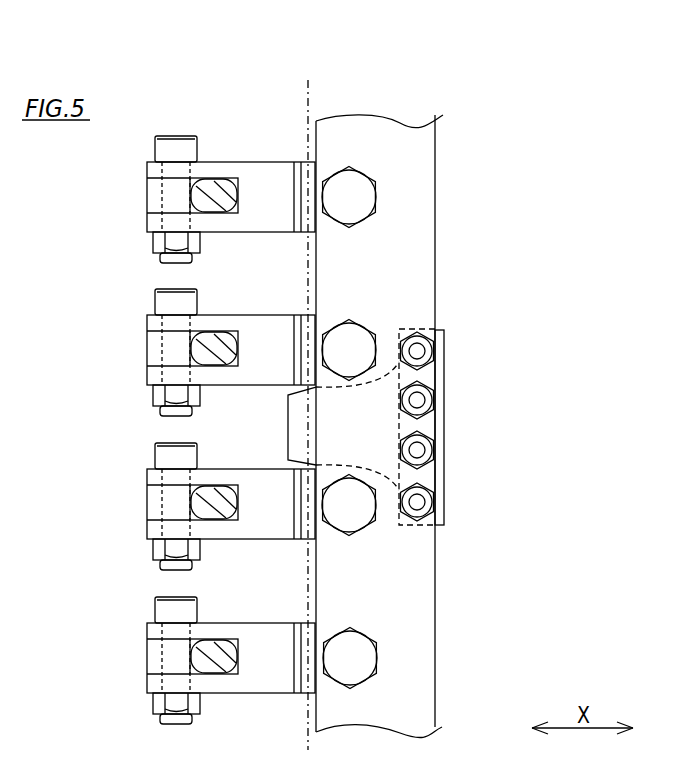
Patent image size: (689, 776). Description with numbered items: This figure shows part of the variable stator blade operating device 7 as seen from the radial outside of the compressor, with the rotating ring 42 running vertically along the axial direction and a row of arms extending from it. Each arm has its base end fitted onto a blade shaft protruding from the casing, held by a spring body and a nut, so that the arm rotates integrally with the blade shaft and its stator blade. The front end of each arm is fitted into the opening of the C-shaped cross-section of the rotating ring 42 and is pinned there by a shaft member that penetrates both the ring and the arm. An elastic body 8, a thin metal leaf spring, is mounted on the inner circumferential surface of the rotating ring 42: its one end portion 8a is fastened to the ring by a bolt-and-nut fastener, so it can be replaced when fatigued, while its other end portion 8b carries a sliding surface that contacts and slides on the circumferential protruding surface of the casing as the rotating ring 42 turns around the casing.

The support assembly 7 is at (516, 322).
The elastic body 8 is at (444, 447).
The one end portion 8a is at (444, 425).
The other end portion 8b is at (288, 423).
The rotating ring 42 is at (435, 607).